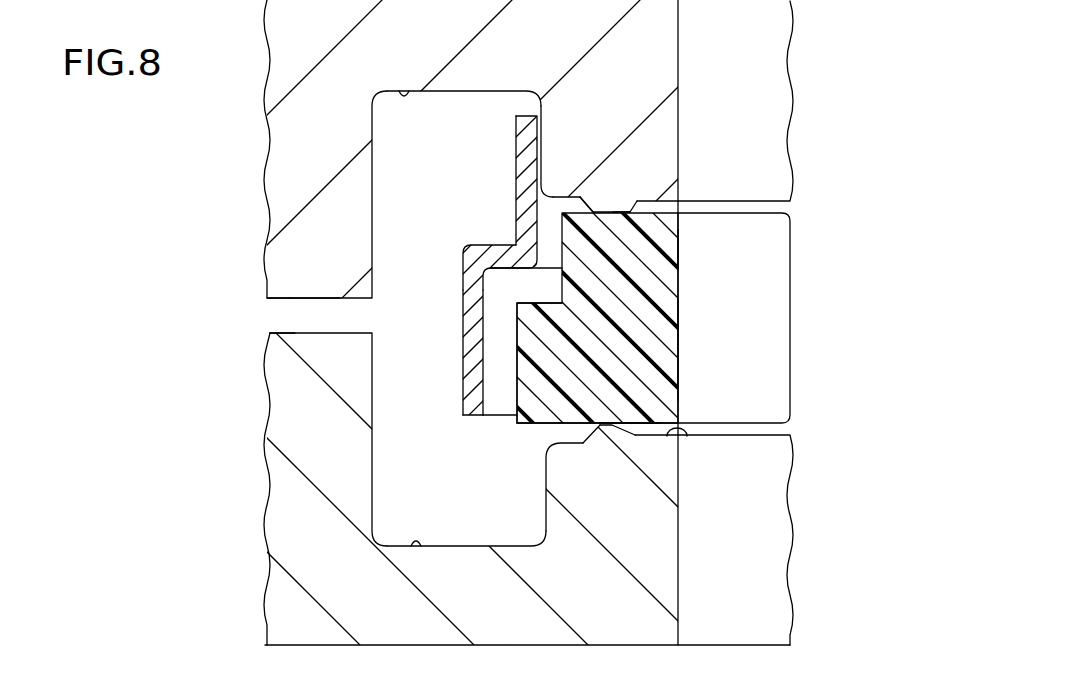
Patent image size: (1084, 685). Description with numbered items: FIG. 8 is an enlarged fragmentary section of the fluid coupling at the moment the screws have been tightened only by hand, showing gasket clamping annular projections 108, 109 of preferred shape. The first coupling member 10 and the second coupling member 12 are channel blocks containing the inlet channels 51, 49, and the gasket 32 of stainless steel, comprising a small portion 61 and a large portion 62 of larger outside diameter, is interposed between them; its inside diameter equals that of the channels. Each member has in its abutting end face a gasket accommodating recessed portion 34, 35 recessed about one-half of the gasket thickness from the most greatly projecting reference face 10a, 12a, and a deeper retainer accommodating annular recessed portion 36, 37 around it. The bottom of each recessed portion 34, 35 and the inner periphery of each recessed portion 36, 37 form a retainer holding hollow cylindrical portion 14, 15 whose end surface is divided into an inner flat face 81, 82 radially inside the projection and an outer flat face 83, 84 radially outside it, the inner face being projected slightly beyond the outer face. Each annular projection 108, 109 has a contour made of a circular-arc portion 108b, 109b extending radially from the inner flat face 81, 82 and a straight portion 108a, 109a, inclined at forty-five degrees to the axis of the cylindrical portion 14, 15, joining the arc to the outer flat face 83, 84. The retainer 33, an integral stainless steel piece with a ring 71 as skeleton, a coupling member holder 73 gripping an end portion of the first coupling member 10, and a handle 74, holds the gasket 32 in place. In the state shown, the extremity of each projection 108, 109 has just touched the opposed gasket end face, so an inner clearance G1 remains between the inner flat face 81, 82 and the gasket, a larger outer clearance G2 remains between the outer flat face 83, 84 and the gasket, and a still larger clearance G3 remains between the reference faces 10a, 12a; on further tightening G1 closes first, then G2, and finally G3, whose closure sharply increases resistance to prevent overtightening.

The first coupling member 10 is at (296, 157).
The reference face 10a is at (280, 299).
The second coupling member 12 is at (302, 471).
The reference face 12a is at (276, 336).
The retainer holding hollow cylindrical portion 14 is at (556, 182).
The retainer holding hollow cylindrical portion 15 is at (563, 457).
The gasket 32 is at (670, 315).
The retainer 33 is at (463, 318).
The gasket accommodating recessed portion 34 is at (675, 203).
The gasket accommodating recessed portion 35 is at (687, 436).
The retainer accommodating annular recessed portion 36 is at (405, 92).
The retainer accommodating annular recessed portion 37 is at (416, 548).
The inlet channel 49 is at (678, 600).
The inlet channel 51 is at (678, 36).
The small portion 61 is at (646, 345).
The large portion 62 is at (528, 378).
The ring 71 is at (463, 258).
The coupling member holder 73 is at (527, 170).
The handle 74 is at (467, 356).
The inner flat face 81 is at (668, 214).
The inner flat face 82 is at (658, 430).
The outer flat face 83 is at (545, 203).
The outer flat face 84 is at (563, 438).
The gasket clamping annular projection 108 is at (613, 209).
The straight portion 108a is at (603, 209).
The circular-arc portion 108b is at (670, 245).
The gasket clamping annular projection 109 is at (607, 430).
The straight portion 109a is at (617, 434).
The circular-arc portion 109b is at (633, 418).
The inner clearance G1 is at (644, 207).
The outer clearance G2 is at (580, 197).
The clearance G3 is at (313, 318).